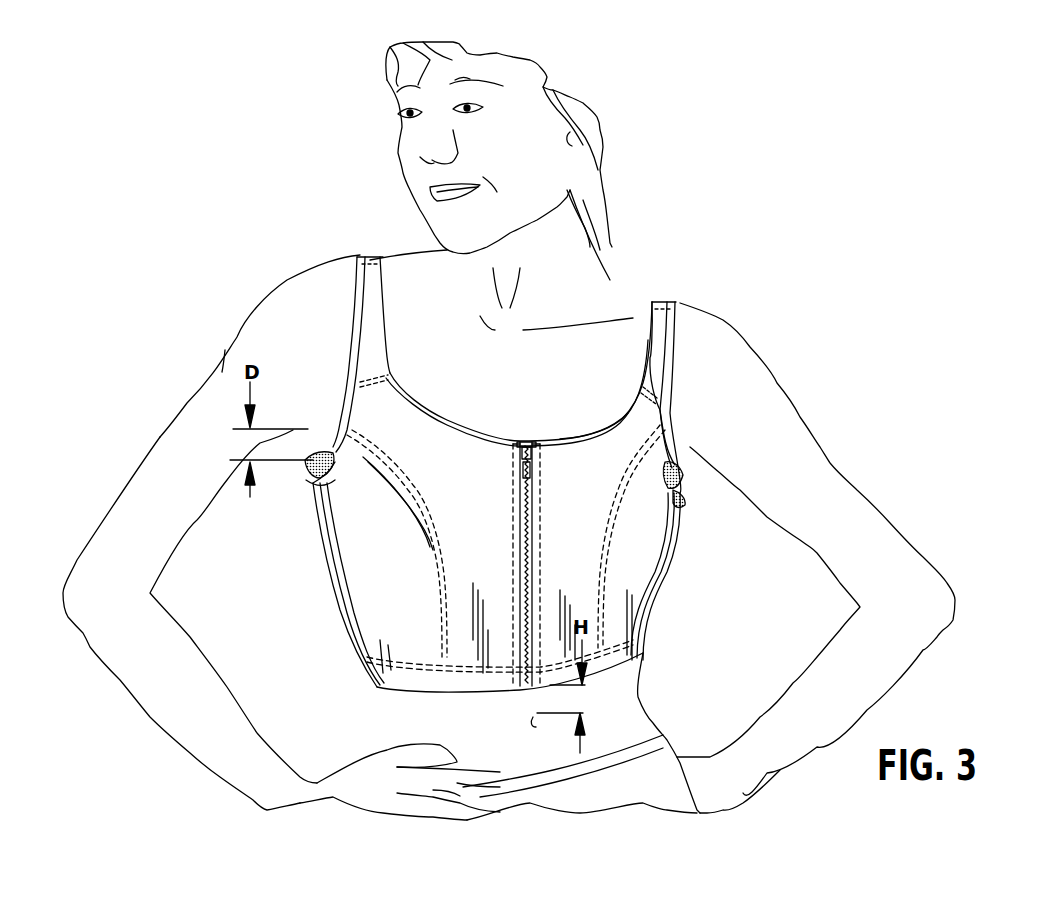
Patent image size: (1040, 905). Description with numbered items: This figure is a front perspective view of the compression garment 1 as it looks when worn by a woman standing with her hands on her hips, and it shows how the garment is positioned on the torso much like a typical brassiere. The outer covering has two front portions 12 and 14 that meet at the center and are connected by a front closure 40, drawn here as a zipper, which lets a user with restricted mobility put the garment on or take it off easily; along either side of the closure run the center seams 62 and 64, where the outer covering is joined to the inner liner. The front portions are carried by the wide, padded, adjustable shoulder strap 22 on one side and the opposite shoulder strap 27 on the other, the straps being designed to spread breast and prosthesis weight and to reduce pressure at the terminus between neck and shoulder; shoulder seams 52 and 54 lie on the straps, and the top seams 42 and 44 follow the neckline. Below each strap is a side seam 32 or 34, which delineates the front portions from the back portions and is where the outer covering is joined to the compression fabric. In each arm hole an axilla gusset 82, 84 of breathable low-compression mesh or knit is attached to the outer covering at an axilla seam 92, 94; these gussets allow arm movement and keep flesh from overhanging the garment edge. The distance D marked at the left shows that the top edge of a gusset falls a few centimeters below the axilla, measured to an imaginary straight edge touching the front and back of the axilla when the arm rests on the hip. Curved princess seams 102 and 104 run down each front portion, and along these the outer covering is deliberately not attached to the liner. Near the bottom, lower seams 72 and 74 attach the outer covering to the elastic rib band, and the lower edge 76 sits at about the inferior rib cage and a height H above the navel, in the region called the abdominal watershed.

The garment 1 is at (692, 269).
The front portion 12 is at (493, 566).
The front portion 14 is at (580, 566).
The shoulder strap 22 is at (367, 307).
The right shoulder strap 27 is at (660, 348).
The side seam 32 is at (330, 574).
The side seam 34 is at (653, 584).
The front closure 40 is at (540, 472).
The top seam 42 is at (443, 420).
The top seam 44 is at (600, 434).
The shoulder seam 52 is at (370, 377).
The shoulder seam 54 is at (647, 381).
The center seam 62 is at (505, 460).
The center seam 64 is at (548, 460).
The lower seam 72 is at (420, 660).
The lower seam 74 is at (548, 660).
The lower edge 76 is at (433, 698).
The axilla gusset 82 is at (343, 473).
The axilla gusset 84 is at (673, 478).
The axilla seam 92 is at (330, 483).
The axilla seam 94 is at (680, 501).
The princess seam 102 is at (420, 494).
The princess seam 104 is at (607, 512).